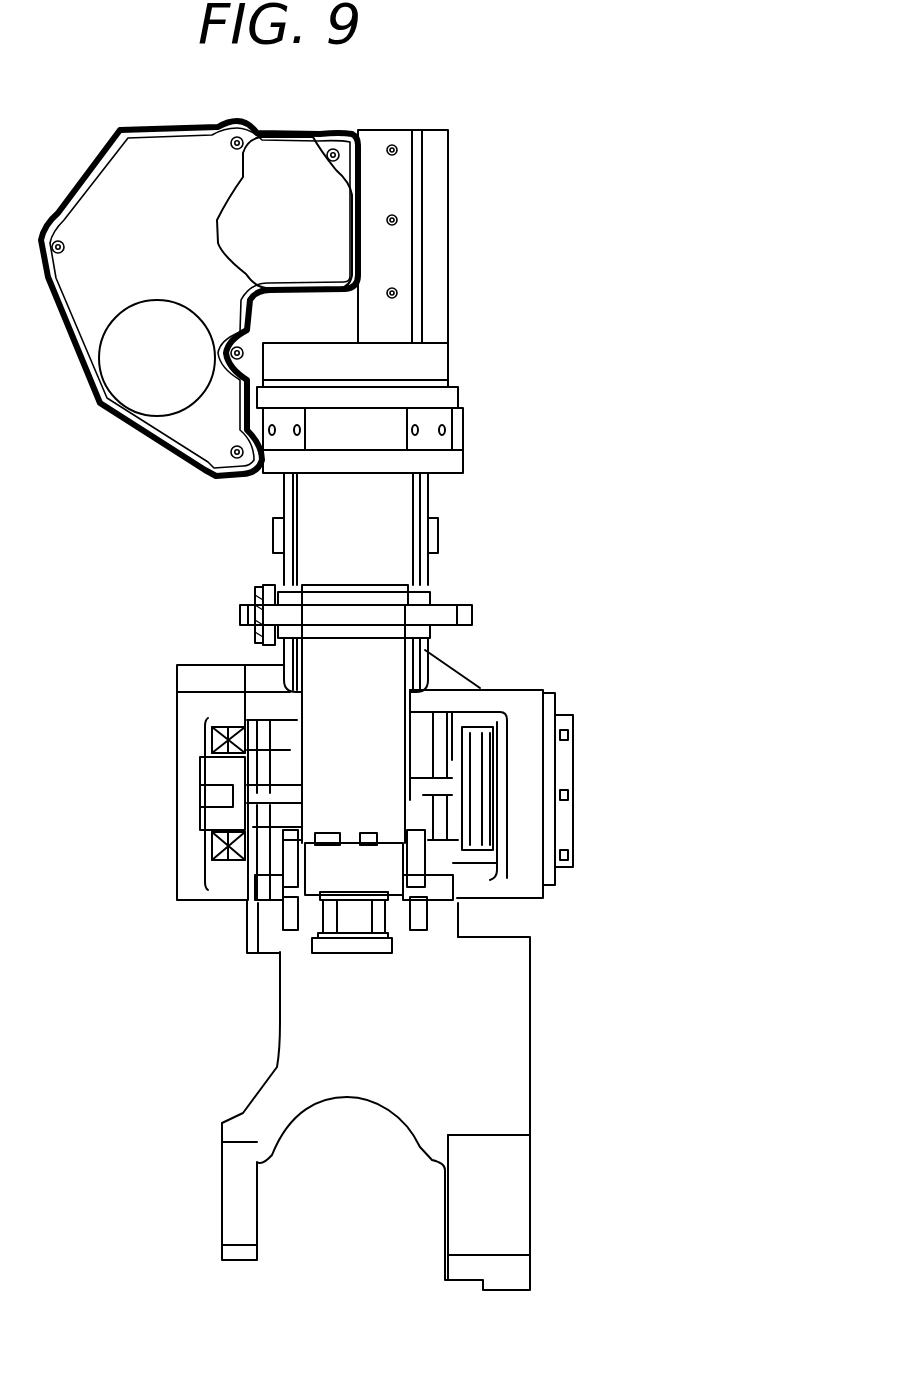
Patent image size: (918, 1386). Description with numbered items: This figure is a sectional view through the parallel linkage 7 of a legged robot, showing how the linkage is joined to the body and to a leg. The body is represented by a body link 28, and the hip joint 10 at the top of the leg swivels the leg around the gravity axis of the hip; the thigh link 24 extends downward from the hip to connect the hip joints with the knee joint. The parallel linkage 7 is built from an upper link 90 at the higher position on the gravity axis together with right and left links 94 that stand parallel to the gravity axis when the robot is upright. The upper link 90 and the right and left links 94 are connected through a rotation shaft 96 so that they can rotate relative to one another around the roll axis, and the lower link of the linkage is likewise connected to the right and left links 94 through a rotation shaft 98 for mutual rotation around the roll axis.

The parallel linkage 7 is at (492, 607).
The joint 10 is at (355, 865).
The thigh link 24 is at (502, 1020).
The body link 28 is at (400, 510).
The upper link 90 is at (267, 592).
The right and left links 94 is at (373, 675).
The rotation shaft 96 is at (245, 613).
The rotation shaft 98 is at (212, 770).